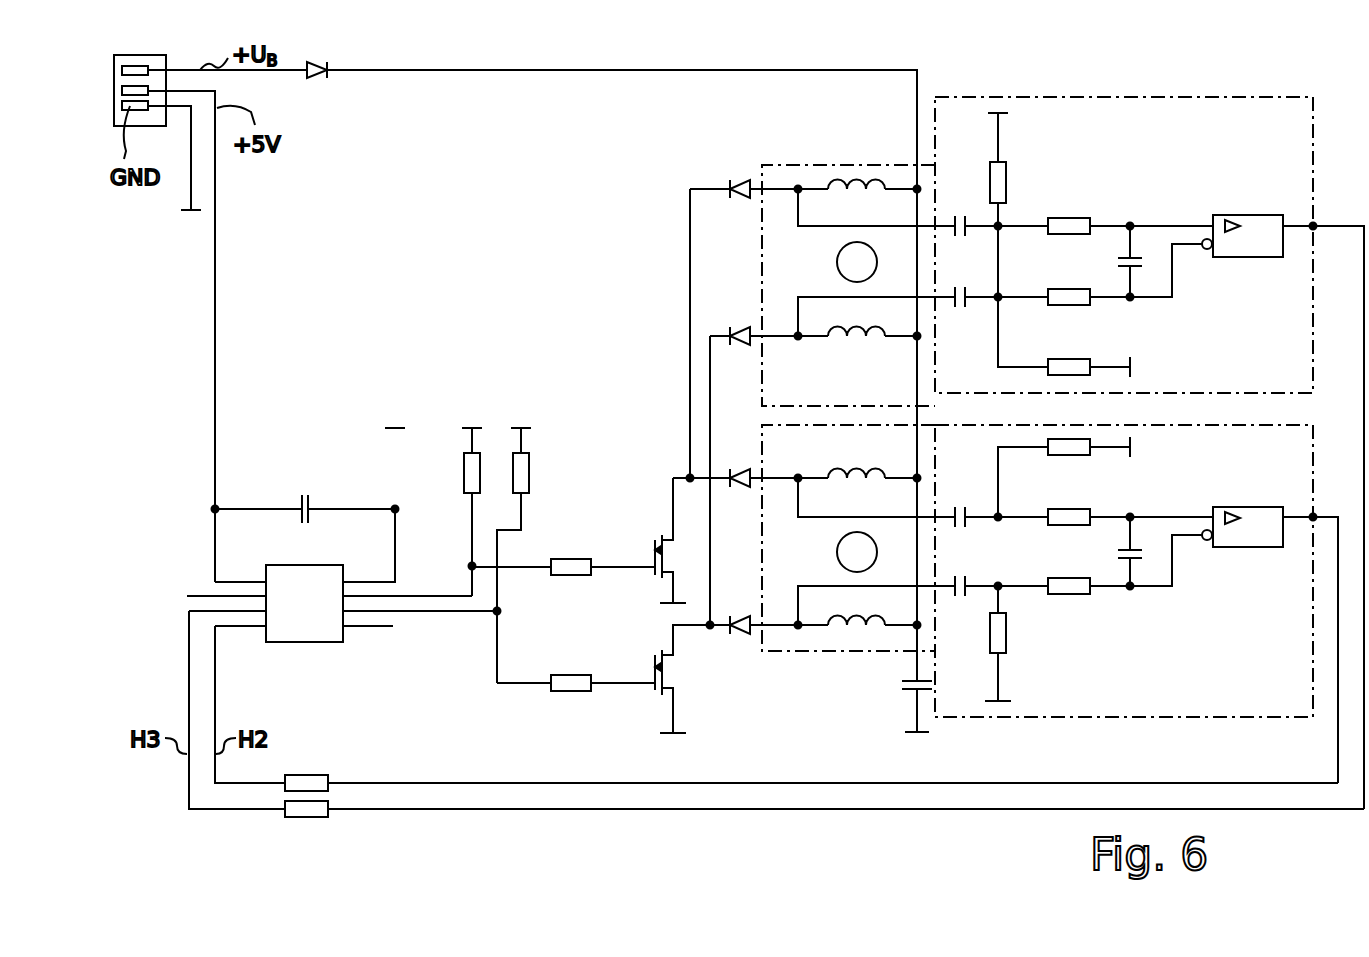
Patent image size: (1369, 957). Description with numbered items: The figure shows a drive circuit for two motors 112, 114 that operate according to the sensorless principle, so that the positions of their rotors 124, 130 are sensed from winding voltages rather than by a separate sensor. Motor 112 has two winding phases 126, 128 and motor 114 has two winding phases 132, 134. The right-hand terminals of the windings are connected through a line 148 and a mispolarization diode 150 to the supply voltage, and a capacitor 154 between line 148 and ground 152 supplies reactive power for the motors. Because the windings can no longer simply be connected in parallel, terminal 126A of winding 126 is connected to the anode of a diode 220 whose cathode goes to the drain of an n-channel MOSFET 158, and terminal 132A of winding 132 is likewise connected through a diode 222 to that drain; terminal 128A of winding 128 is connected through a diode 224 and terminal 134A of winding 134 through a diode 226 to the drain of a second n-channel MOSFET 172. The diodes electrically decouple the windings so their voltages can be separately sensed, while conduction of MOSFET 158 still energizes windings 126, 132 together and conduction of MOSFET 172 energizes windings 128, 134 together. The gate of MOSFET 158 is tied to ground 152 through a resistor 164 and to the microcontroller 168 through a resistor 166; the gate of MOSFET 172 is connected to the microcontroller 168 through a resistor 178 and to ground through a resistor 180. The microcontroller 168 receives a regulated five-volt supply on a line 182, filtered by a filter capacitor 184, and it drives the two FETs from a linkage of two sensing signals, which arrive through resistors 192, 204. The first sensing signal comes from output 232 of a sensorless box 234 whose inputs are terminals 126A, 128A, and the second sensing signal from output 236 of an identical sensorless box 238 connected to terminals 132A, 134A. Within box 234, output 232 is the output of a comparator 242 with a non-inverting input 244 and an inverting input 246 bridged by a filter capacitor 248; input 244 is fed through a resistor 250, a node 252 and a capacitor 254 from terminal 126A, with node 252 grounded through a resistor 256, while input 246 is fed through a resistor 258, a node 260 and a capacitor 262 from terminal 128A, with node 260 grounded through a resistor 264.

The motor 112 is at (832, 657).
The motor 114 is at (833, 162).
The rotor 124 is at (870, 564).
The winding phase 126 is at (853, 487).
The terminal 126A is at (798, 476).
The winding phase 128 is at (854, 621).
The terminal 128A is at (792, 641).
The rotor 130 is at (870, 274).
The winding phase 132 is at (854, 198).
The terminal 132A is at (804, 185).
The winding phase 134 is at (855, 345).
The terminal 134A is at (801, 333).
The line 148 is at (930, 88).
The diode 150 is at (325, 80).
The ground 152 is at (176, 192).
The capacitor 154 is at (904, 680).
The n-channel MOSFET 158 is at (652, 544).
The resistor 164 is at (464, 476).
The resistor 166 is at (566, 577).
The microcontroller 168 is at (305, 630).
The n-channel MOSFET 172 is at (654, 656).
The resistor 178 is at (561, 700).
The resistor 180 is at (528, 476).
The line 182 is at (221, 375).
The filter capacitor 184 is at (310, 502).
The resistor 192 is at (308, 775).
The resistor 204 is at (306, 818).
The diode 220 is at (738, 473).
The diode 222 is at (738, 181).
The diode 224 is at (738, 620).
The diode 226 is at (738, 330).
The output 232 is at (1312, 514).
The sensorless box 234 is at (1138, 717).
The output 236 is at (1310, 225).
The sensorless box 238 is at (1108, 97).
The comparator 242 is at (1216, 511).
The non-inverting input 244 is at (1190, 487).
The inverting input 246 is at (1190, 540).
The filter capacitor 248 is at (1148, 598).
The resistor 250 is at (1070, 514).
The node 252 is at (996, 528).
The capacitor 254 is at (988, 485).
The resistor 256 is at (1061, 450).
The resistor 258 is at (1075, 598).
The node 260 is at (1000, 584).
The capacitor 262 is at (975, 606).
The resistor 264 is at (1006, 638).